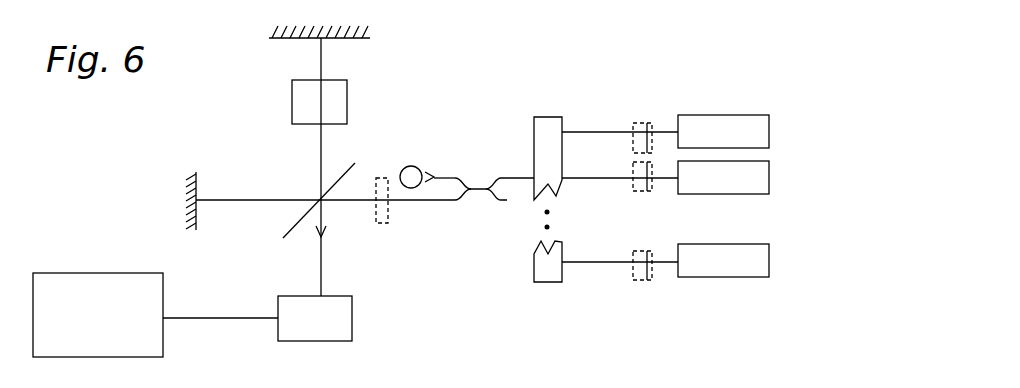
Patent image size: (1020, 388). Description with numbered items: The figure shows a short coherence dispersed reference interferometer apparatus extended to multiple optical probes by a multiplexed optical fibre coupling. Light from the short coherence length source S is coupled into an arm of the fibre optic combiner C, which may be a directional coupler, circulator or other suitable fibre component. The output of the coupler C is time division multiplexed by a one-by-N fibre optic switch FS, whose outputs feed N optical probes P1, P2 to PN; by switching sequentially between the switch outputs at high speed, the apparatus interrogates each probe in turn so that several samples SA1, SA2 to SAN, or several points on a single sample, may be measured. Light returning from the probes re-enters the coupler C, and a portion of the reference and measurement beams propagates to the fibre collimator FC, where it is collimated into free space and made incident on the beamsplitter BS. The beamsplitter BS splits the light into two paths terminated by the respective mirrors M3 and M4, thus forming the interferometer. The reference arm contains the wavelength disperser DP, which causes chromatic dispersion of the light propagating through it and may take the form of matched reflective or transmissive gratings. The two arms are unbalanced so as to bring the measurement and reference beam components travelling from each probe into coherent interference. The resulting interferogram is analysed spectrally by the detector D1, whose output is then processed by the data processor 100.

The data processor 100 is at (90, 273).
The mirror M4 is at (335, 35).
The mirror M3 is at (190, 187).
The wavelength disperser DP is at (336, 102).
The beamsplitter BS is at (299, 209).
The fibre collimator FC is at (382, 216).
The short coherence length source S is at (427, 177).
The fibre optic combiner C is at (494, 178).
The 1×N fibre optic switch FS is at (547, 216).
The optical probe P1 is at (643, 123).
The optical probe P2 is at (643, 191).
The optical probe PN is at (644, 281).
The sample SA1 is at (769, 132).
The sample SA2 is at (769, 178).
The sample SAN is at (769, 262).
The detector D1 is at (315, 318).